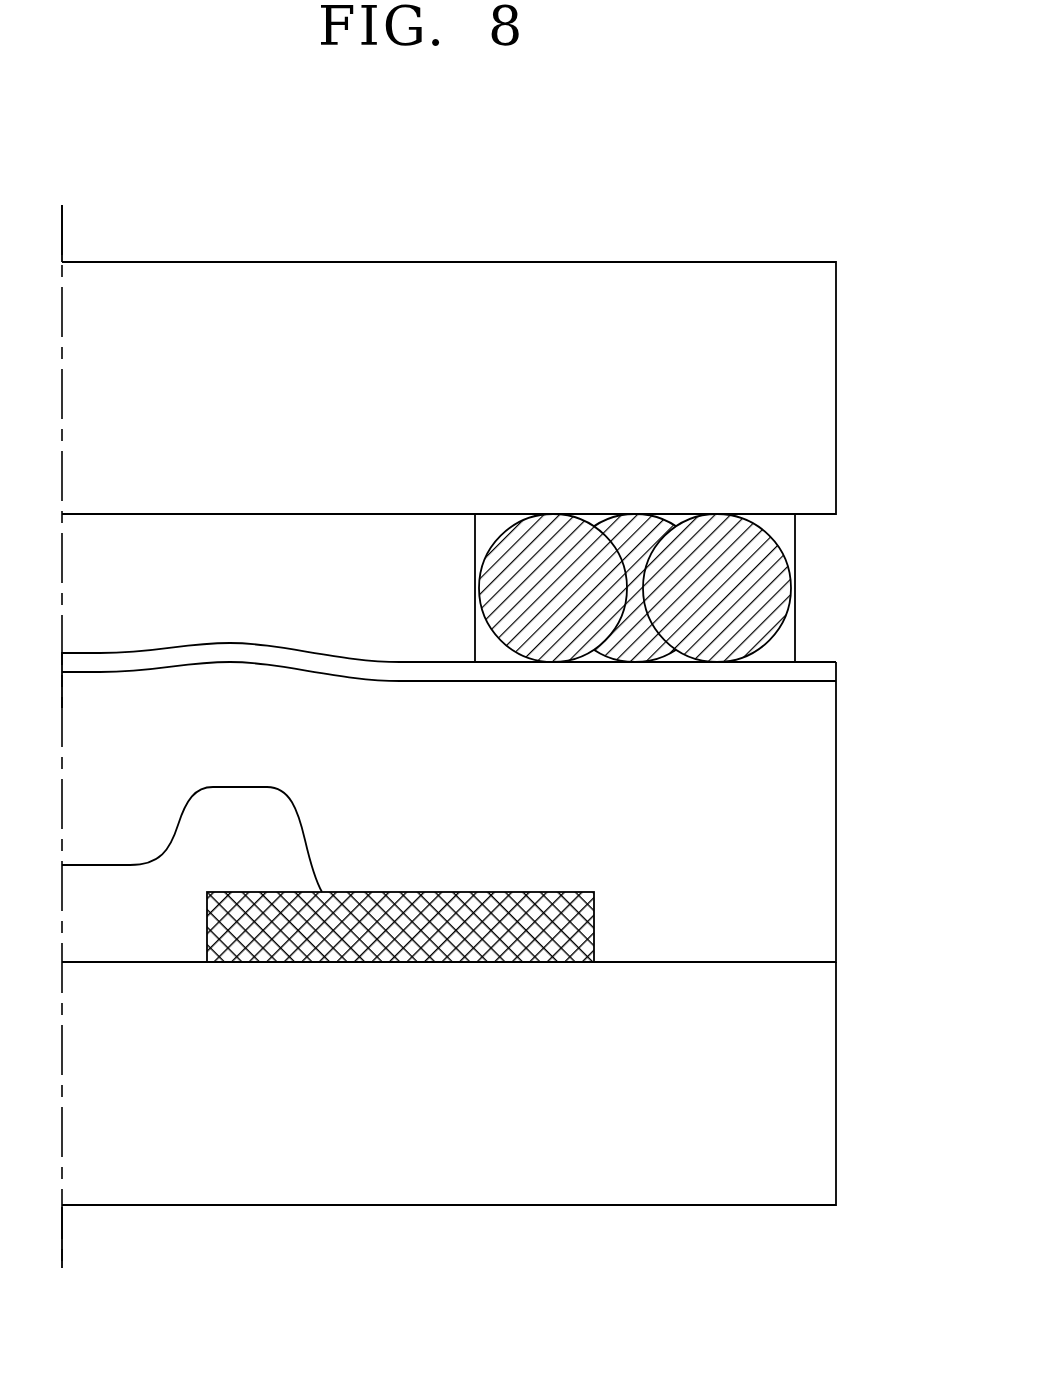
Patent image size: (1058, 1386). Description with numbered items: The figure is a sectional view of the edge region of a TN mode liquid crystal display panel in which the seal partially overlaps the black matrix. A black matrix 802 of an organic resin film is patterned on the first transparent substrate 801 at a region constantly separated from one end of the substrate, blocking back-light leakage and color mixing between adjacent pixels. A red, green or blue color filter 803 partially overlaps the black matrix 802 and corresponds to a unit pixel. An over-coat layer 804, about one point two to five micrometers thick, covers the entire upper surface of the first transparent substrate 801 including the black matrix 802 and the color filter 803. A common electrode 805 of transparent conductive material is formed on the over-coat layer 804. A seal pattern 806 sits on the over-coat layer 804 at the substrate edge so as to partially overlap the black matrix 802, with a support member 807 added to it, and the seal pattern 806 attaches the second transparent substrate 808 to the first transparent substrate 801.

The first transparent substrate 801 is at (811, 1132).
The black matrix 802 is at (594, 918).
The color filter 803 is at (167, 917).
The over-coat layer 804 is at (803, 867).
The common electrode 805 is at (808, 670).
The seal pattern 806 is at (771, 650).
The support member 807 is at (793, 573).
The second transparent substrate 808 is at (770, 413).